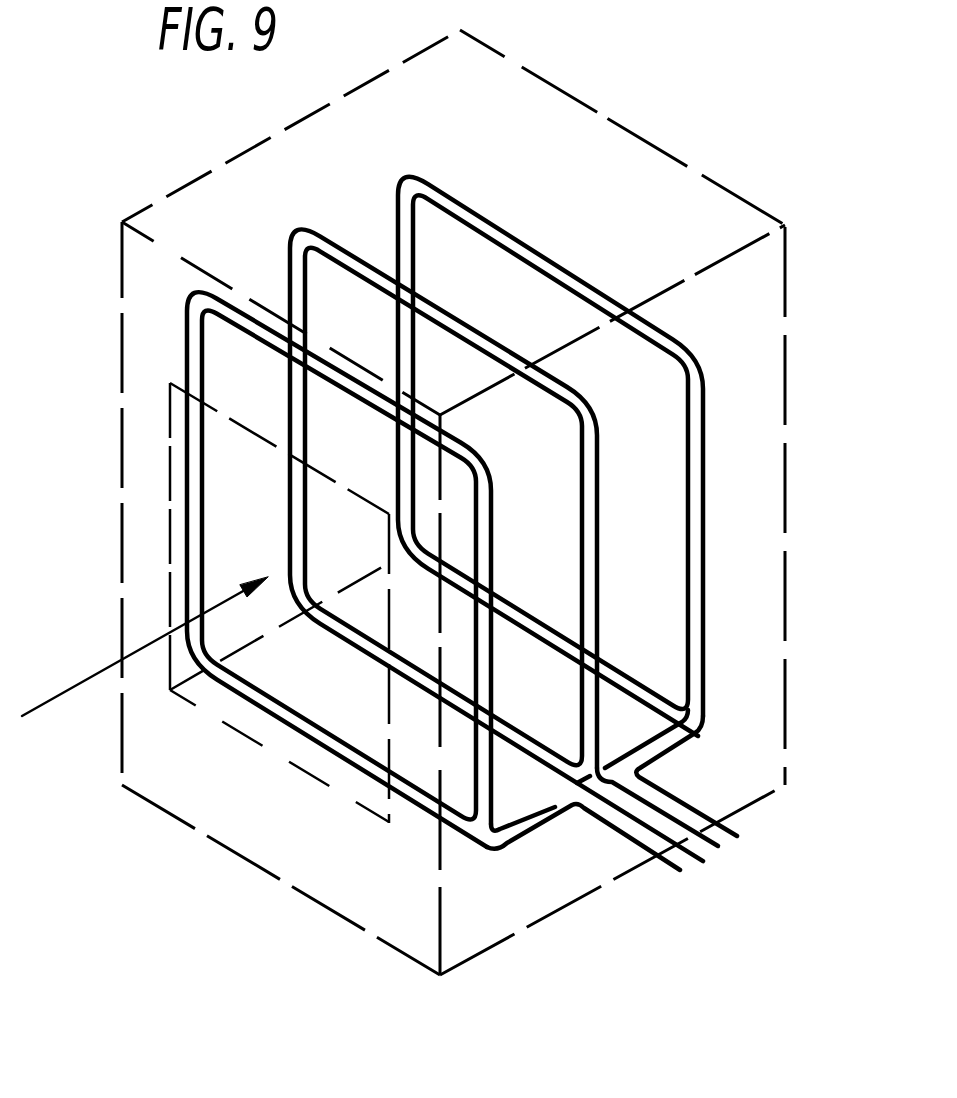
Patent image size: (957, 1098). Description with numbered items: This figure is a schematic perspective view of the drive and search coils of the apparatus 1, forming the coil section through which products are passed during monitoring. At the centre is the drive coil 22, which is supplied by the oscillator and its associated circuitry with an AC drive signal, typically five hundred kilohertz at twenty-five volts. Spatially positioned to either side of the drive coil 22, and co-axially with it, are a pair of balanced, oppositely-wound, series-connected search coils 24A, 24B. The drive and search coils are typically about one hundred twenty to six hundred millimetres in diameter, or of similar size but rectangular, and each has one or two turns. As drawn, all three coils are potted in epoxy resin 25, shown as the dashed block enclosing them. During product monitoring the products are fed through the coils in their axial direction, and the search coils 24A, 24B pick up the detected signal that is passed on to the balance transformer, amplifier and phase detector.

The heat exchange apparatus 1 is at (603, 72).
The drive coil 22 is at (598, 527).
The search coil 24A is at (493, 570).
The search coil 24B is at (707, 434).
The epoxy resin 25 is at (773, 656).